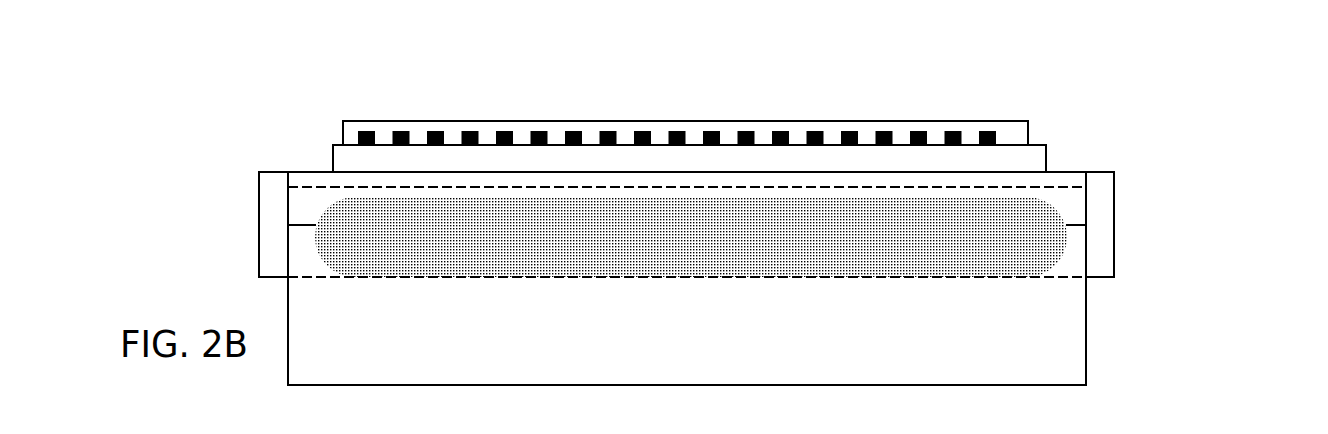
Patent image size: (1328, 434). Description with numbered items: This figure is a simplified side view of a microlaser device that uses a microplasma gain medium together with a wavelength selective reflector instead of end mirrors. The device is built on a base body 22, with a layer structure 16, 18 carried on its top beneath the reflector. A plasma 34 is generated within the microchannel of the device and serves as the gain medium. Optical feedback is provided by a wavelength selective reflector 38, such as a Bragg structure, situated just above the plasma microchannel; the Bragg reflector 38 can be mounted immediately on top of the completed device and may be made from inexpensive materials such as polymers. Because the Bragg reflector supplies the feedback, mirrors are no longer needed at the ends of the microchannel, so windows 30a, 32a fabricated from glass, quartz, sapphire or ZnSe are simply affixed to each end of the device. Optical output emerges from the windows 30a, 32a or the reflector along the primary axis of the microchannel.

The substrate 16 is at (345, 157).
The electrode layer 18 is at (689, 158).
The base body 22 is at (525, 346).
The window 30a is at (280, 233).
The window 32a is at (1114, 233).
The plasma 34 is at (917, 233).
The wavelength selective reflector 38 is at (687, 120).